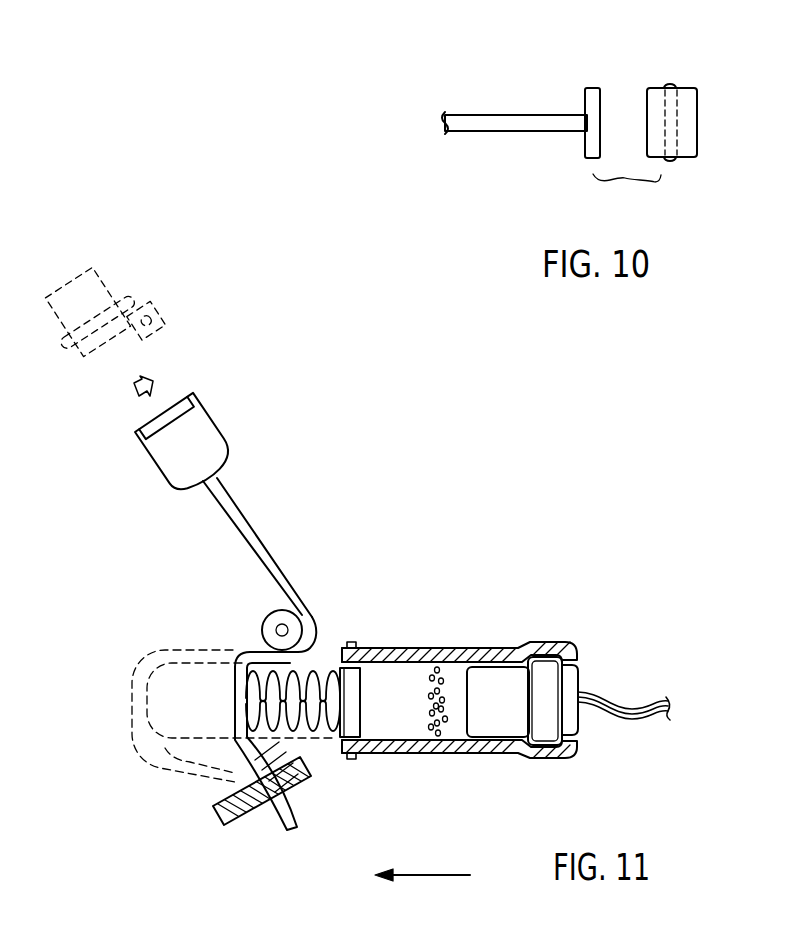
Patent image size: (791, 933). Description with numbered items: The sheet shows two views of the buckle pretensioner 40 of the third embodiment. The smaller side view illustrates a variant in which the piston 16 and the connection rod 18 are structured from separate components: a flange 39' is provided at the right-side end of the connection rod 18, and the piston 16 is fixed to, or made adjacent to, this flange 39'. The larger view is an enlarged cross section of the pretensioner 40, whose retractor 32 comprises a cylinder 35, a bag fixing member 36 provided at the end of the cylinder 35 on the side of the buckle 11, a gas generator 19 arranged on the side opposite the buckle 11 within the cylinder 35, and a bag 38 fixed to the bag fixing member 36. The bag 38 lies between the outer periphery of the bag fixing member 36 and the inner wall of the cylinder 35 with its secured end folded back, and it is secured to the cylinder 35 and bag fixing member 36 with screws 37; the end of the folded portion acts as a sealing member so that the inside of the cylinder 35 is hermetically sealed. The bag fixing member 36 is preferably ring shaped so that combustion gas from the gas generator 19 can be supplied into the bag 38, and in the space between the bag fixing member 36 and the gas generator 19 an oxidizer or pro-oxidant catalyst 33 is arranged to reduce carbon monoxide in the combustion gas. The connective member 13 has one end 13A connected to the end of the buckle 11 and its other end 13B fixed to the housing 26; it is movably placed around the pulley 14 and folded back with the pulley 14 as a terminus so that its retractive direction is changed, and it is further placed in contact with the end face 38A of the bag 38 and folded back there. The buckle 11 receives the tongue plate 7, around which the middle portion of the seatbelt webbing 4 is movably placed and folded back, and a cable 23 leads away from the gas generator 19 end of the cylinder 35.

In FIG. 10, the connection rod 18 is at (483, 126).
In FIG. 10, the flange 39' is at (584, 93).
In FIG. 10, the piston 16 is at (685, 95).
In FIG. 11, the webbing 4 is at (100, 296).
In FIG. 11, the tongue plate 7 is at (137, 318).
In FIG. 11, the buckle 11 is at (203, 433).
In FIG. 11, the connective member 13 is at (258, 542).
In FIG. 11, the one end of connective member 13A is at (231, 503).
In FIG. 11, the other end of connective member 13B is at (291, 834).
In FIG. 11, the pulley 14 is at (266, 627).
In FIG. 11, the housing 26 is at (244, 812).
In FIG. 11, the end face of bag 38A is at (252, 704).
In FIG. 11, the buckle pretensioner 40 is at (443, 434).
In FIG. 11, the retractor 32 is at (506, 535).
In FIG. 11, the bag 38 is at (314, 725).
In FIG. 11, the cylinder 35 is at (487, 748).
In FIG. 11, the screws 37 is at (355, 641).
In FIG. 11, the bag fixing member 36 is at (353, 700).
In FIG. 11, the oxidizer or pro-oxidant (catalyst) 33 is at (446, 670).
In FIG. 11, the gas generator 19 is at (551, 670).
In FIG. 11, the cable 23 is at (606, 700).